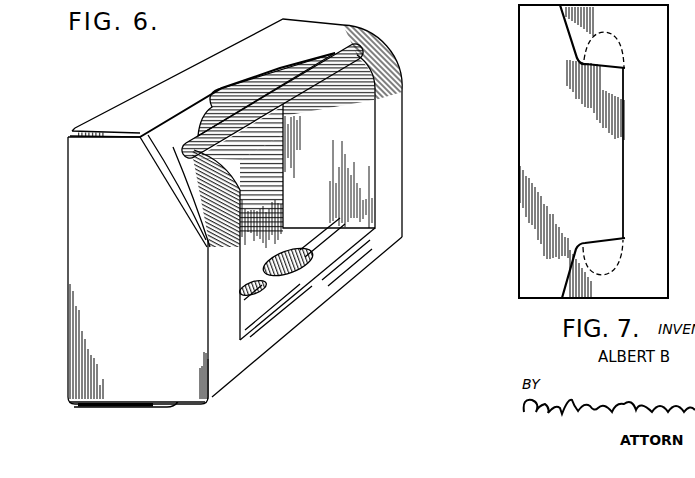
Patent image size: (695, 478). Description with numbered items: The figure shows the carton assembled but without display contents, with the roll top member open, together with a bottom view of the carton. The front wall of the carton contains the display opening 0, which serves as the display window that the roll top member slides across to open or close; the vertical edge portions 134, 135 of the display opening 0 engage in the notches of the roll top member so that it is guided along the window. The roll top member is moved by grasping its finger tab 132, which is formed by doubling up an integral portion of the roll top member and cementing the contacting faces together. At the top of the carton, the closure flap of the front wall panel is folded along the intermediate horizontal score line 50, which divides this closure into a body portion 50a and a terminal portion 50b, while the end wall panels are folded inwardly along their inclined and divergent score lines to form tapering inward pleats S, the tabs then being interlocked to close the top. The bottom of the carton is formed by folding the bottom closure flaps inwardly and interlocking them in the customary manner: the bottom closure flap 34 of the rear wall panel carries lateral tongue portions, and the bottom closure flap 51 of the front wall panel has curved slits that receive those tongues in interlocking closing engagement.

In FIG. 6, the intermediate horizontal score line 50 is at (80, 126).
In FIG. 6, the body portion 50a is at (145, 103).
In FIG. 6, the terminal portion 50b is at (76, 135).
In FIG. 6, the tapering inward pleats S is at (187, 188).
In FIG. 6, the finger tab 132 is at (355, 48).
In FIG. 6, the vertical edge portion 135 is at (377, 127).
In FIG. 6, the display opening 0 is at (358, 168).
In FIG. 6, the vertical edge portion 134 is at (240, 310).
In FIG. 6, the bottom closure flap 34 is at (96, 412).
In FIG. 7, the bottom closure flap 34 is at (572, 151).
In FIG. 6, the bottom closure flap 51 is at (177, 408).
In FIG. 7, the bottom closure flap 51 is at (639, 153).